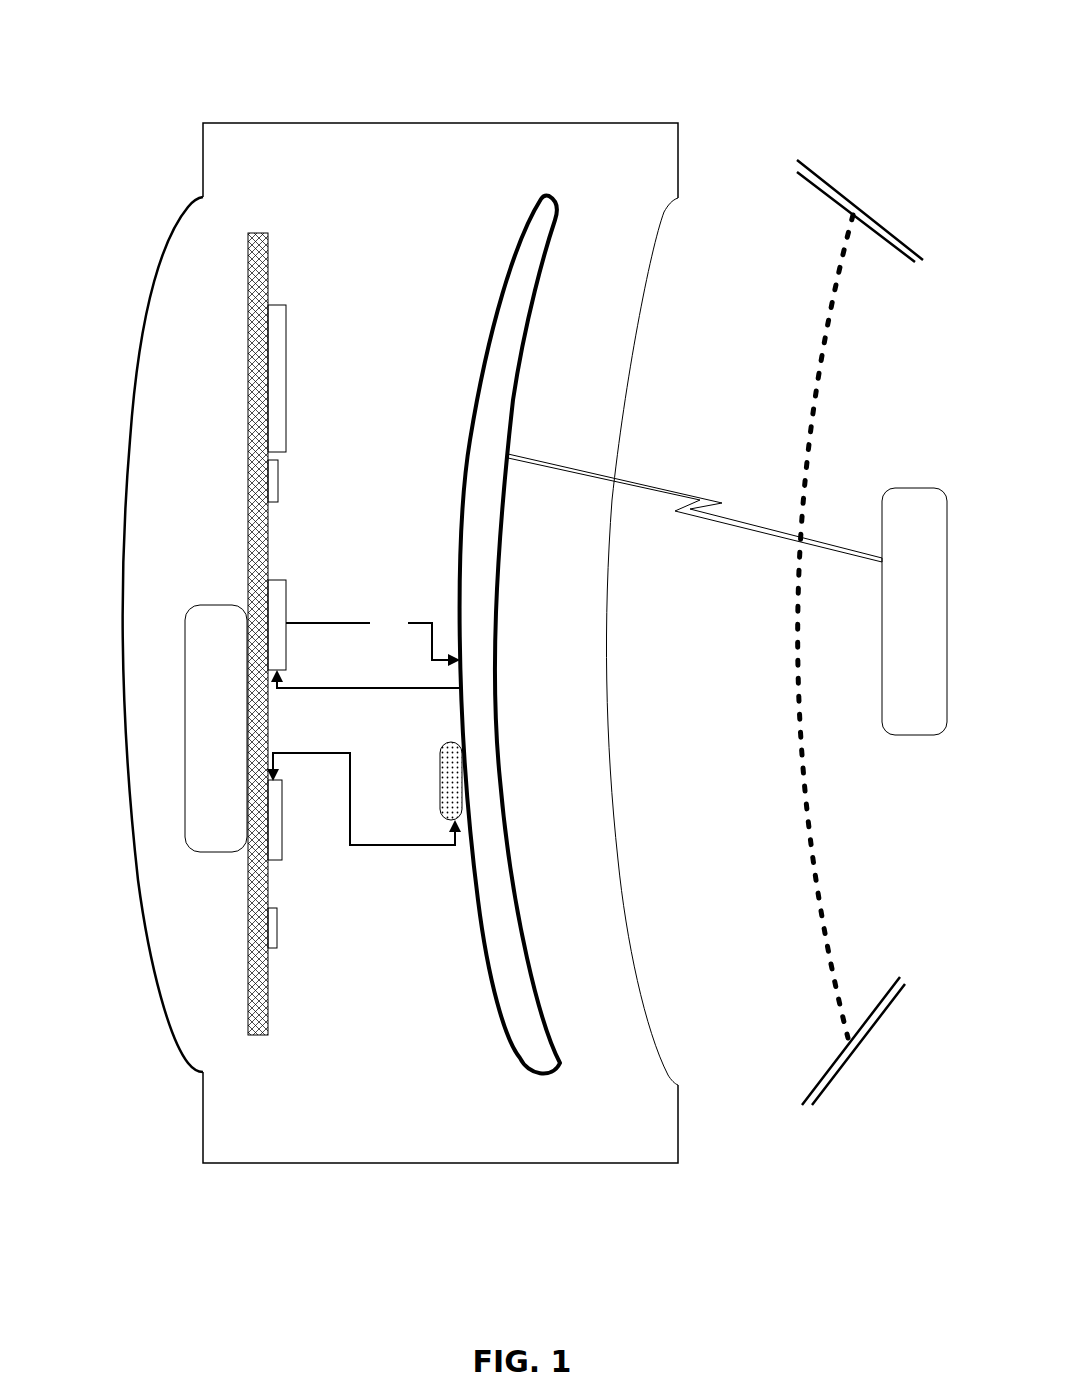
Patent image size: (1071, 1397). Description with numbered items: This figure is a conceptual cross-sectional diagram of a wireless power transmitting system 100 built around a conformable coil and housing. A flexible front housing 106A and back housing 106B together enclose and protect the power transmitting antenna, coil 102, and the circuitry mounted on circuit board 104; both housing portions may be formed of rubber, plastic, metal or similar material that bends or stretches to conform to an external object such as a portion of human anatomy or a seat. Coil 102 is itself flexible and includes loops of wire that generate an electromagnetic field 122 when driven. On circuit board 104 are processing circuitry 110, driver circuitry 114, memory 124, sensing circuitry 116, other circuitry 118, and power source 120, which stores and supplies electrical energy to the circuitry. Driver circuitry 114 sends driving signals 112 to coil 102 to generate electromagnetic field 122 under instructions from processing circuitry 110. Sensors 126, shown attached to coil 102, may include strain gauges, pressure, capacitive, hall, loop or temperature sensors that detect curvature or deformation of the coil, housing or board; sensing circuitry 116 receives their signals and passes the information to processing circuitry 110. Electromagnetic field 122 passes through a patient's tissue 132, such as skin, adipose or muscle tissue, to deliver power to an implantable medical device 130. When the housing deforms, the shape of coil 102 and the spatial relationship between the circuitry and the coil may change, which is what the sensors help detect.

The wireless power transmitting system 100 is at (179, 44).
The coil 102 is at (510, 1072).
The circuit board 104 is at (264, 224).
The front housing 106A is at (168, 1062).
The back housing 106B is at (690, 1105).
The processing circuitry 110 is at (298, 377).
The driving signals 112 is at (365, 649).
The driver circuitry 114 is at (297, 590).
The sensing circuitry 116 is at (296, 825).
The other circuitry 118 is at (290, 928).
The power source 120 is at (198, 743).
The electromagnetic field 122 is at (683, 520).
The memory 124 is at (291, 480).
The sensors 126 is at (428, 779).
The implantable medical device 130 is at (896, 623).
The tissue 132 is at (795, 690).